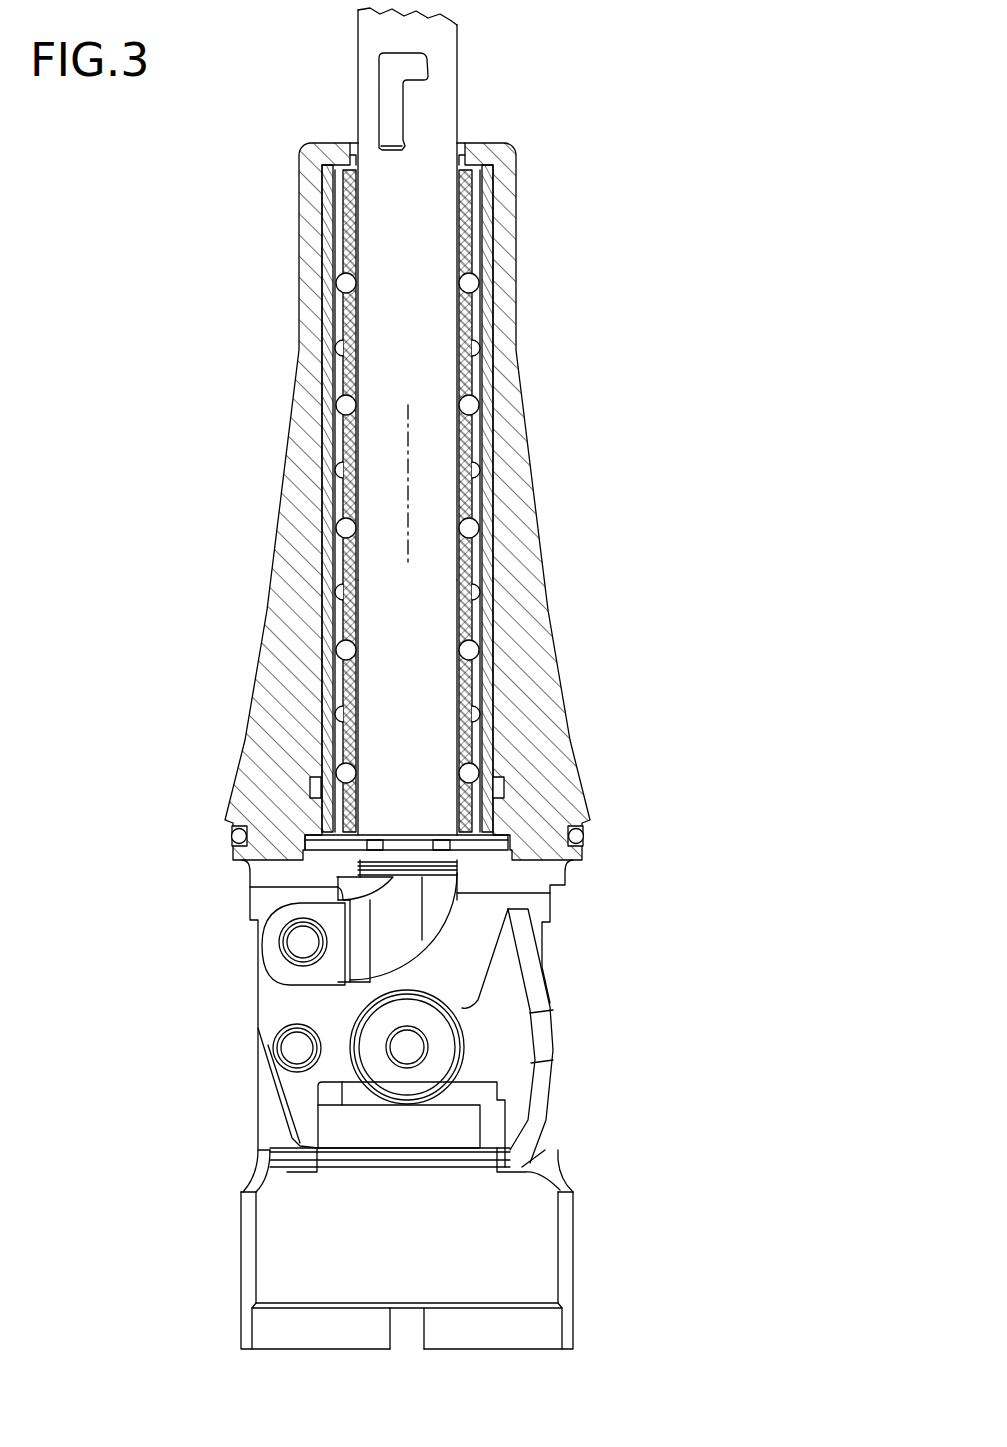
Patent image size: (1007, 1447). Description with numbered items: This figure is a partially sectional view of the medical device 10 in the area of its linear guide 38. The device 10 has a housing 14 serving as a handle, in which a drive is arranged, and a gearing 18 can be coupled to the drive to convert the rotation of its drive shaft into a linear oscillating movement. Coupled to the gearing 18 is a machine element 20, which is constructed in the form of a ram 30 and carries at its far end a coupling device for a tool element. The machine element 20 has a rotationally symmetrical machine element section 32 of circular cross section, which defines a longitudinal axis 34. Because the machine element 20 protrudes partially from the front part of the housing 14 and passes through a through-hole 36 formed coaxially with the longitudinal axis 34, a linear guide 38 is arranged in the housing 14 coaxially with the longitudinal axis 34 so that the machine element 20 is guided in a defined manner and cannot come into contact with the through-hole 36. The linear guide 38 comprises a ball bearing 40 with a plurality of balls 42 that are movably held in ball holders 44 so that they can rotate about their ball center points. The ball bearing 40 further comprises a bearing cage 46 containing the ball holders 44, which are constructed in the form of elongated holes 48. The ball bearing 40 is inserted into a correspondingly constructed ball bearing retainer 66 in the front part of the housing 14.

The medical device 10 is at (763, 425).
The housing 14 is at (597, 1322).
The gearing 18 is at (568, 1020).
The machine element 20 is at (468, 123).
The ram 30 is at (428, 360).
The machine element section 32 is at (388, 582).
The longitudinal axis 34 is at (410, 448).
The through-hole 36 is at (362, 152).
The linear guide 38 is at (512, 524).
The ball bearing 40 is at (318, 446).
The balls 42 is at (472, 290).
The ball holders 44 is at (480, 645).
The bearing cage 46 is at (468, 208).
The elongated holes 48 is at (343, 290).
The ball bearing retainer 66 is at (330, 742).